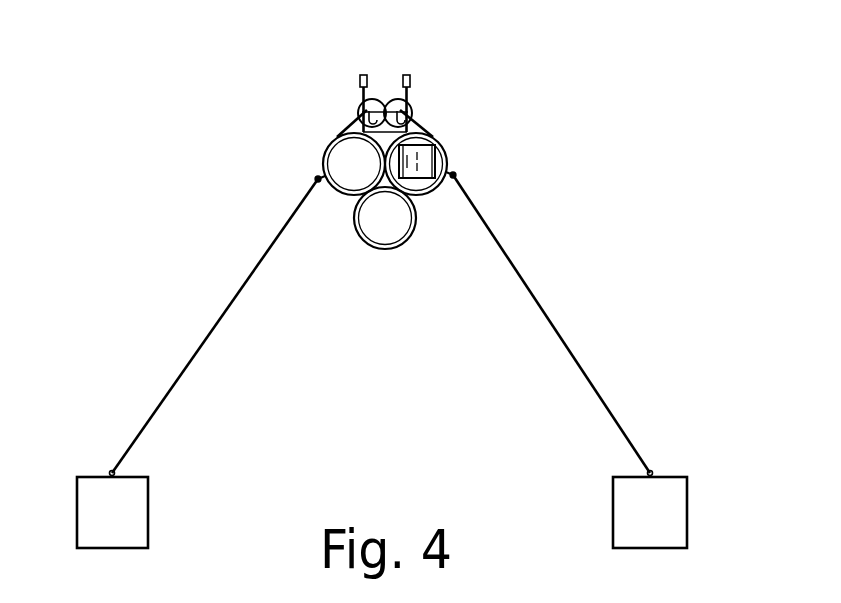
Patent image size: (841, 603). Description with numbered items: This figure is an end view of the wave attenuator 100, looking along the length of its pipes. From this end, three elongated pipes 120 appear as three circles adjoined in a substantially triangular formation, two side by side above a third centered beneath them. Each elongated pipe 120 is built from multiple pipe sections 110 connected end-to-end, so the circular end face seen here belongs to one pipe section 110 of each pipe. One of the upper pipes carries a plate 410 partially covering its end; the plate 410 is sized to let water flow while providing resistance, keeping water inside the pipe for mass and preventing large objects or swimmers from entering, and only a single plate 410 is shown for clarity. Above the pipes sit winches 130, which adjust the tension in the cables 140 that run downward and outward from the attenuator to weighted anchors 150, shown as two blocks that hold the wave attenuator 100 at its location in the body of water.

The wave attenuator 100 is at (458, 40).
The pipe section 110 is at (440, 140).
The elongated pipe 120 is at (402, 265).
The winch 130 is at (338, 98).
The cable 140 is at (210, 332).
The weighted anchor 150 is at (148, 482).
The plate 410 is at (435, 155).